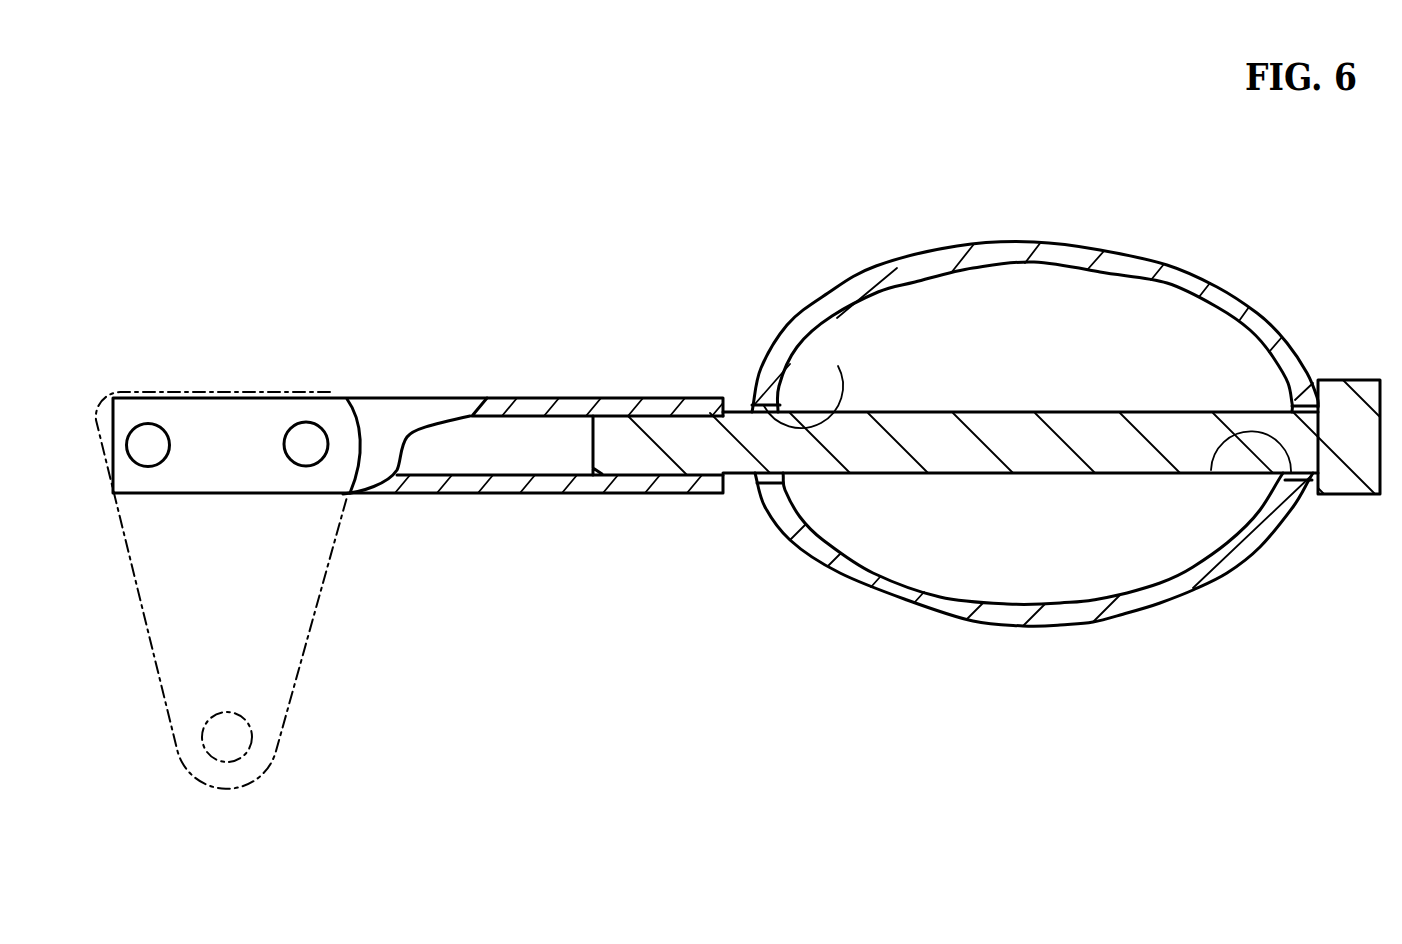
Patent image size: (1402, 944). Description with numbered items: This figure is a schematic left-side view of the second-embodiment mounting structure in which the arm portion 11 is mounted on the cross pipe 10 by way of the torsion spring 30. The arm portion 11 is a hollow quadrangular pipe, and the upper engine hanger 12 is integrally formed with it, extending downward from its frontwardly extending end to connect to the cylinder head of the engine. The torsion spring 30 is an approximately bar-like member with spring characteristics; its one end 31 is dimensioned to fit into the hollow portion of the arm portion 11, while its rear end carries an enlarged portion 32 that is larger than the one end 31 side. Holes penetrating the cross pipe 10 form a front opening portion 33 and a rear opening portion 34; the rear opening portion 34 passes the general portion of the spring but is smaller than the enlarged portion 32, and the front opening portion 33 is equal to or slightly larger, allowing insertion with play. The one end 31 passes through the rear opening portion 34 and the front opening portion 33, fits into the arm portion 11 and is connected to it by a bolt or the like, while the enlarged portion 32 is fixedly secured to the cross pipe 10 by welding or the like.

The cross pipe 10 is at (1073, 243).
The arm portion 11 is at (400, 396).
The upper engine hanger 12 is at (303, 632).
The torsion spring 30 is at (950, 427).
The one end 31 is at (620, 452).
The enlarged portion 32 is at (1356, 497).
The front opening portion 33 is at (838, 366).
The rear opening portion 34 is at (1211, 470).